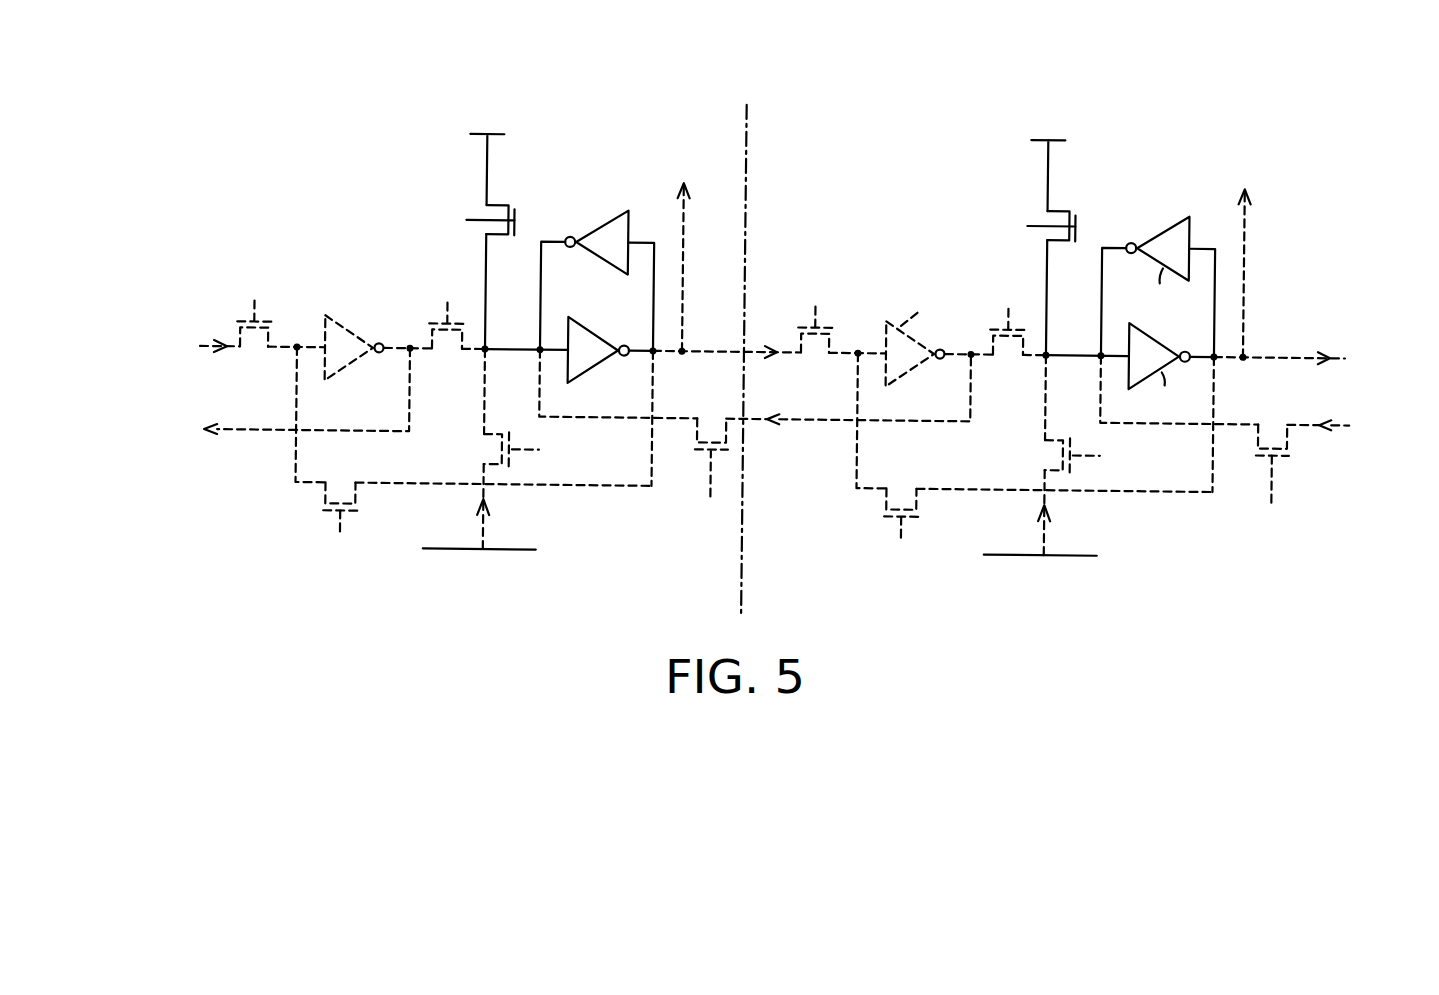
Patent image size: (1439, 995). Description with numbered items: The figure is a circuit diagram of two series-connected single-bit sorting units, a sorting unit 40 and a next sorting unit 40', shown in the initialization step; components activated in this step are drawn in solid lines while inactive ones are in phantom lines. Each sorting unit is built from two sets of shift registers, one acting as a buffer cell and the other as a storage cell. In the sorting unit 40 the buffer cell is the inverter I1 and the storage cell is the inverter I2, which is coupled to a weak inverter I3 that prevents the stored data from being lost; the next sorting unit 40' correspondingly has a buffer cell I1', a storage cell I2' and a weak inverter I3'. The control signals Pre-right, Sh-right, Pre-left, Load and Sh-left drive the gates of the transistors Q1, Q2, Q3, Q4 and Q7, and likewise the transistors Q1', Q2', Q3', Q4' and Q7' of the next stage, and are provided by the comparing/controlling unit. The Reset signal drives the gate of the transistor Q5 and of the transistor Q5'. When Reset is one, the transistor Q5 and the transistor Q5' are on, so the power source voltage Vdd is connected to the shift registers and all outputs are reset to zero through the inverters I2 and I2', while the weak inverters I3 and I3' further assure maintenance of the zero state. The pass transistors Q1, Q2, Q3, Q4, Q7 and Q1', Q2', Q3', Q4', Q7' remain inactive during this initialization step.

The sorting unit 40 is at (533, 316).
The next sorting unit 40' is at (1091, 317).
The transistor Q1 is at (255, 340).
The buffer cell inverter I1 is at (354, 348).
The transistor Q2 is at (447, 341).
The transistor Q3 is at (343, 490).
The transistor Q4 is at (490, 451).
The transistor Q5 is at (506, 240).
The transistor Q7 is at (713, 443).
The storage cell inverter I2 is at (599, 350).
The weak inverter I3 is at (597, 242).
The transistor Q1' is at (819, 345).
The buffer cell inverter I1' is at (919, 344).
The transistor Q2' is at (1009, 349).
The transistor Q3' is at (909, 497).
The transistor Q4' is at (1052, 454).
The transistor Q5' is at (1073, 245).
The transistor Q7' is at (1280, 448).
The storage cell inverter I2' is at (1159, 371).
The weak inverter I3' is at (1157, 268).